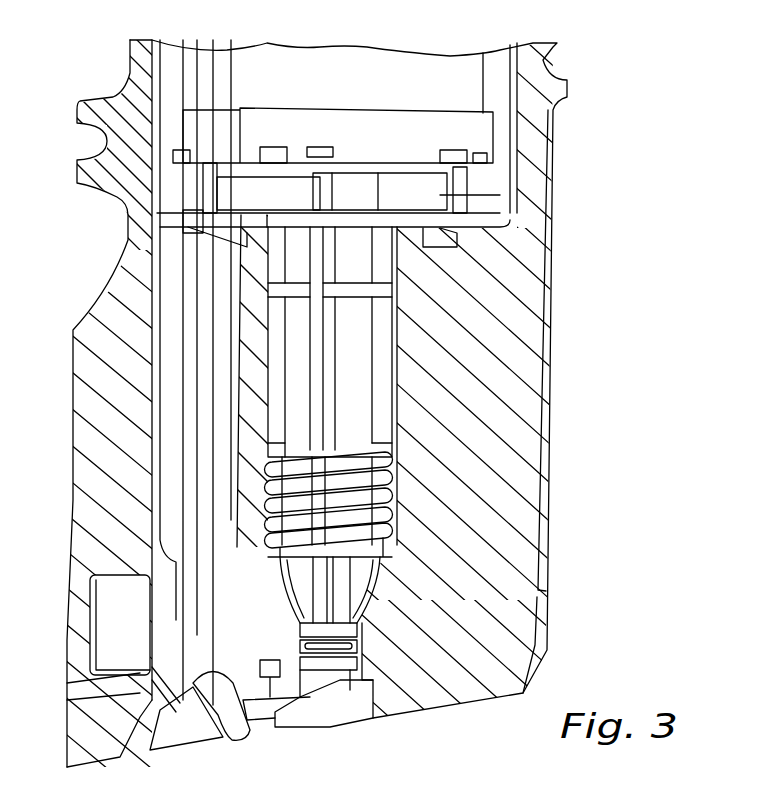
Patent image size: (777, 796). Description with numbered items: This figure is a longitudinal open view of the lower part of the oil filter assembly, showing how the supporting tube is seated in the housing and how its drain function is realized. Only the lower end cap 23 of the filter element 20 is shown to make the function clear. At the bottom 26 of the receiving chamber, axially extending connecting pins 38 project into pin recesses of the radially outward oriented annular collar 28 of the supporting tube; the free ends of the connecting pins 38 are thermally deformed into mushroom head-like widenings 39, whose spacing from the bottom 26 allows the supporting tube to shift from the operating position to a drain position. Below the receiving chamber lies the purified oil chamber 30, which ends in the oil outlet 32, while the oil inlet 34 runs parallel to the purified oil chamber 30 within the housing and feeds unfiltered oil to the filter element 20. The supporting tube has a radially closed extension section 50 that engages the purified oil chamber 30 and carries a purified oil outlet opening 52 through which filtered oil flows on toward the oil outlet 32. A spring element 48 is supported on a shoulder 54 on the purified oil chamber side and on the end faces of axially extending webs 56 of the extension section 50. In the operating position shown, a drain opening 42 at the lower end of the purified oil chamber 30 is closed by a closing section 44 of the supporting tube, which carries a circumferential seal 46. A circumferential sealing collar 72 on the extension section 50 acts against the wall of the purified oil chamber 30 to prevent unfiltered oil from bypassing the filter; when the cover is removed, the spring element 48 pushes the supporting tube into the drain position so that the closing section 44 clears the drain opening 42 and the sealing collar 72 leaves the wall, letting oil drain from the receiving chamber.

The filter element 20 is at (452, 80).
The end cap 23 is at (480, 137).
The bottom 26 is at (423, 246).
The annular collar 28 is at (447, 193).
The purified oil chamber 30 is at (395, 600).
The oil outlet 32 is at (287, 580).
The oil inlet 34 is at (200, 385).
The connecting pins 38 is at (478, 188).
The mushroom head-like widenings 39 is at (470, 177).
The drain opening 42 is at (320, 700).
The closing section 44 is at (365, 630).
The circumferential seal 46 is at (358, 646).
The spring element 48 is at (393, 470).
The extension section 50 is at (360, 353).
The purified oil outlet opening 52 is at (372, 582).
The shoulder 54 is at (272, 540).
The webs 56 is at (317, 403).
The sealing collar 72 is at (400, 284).